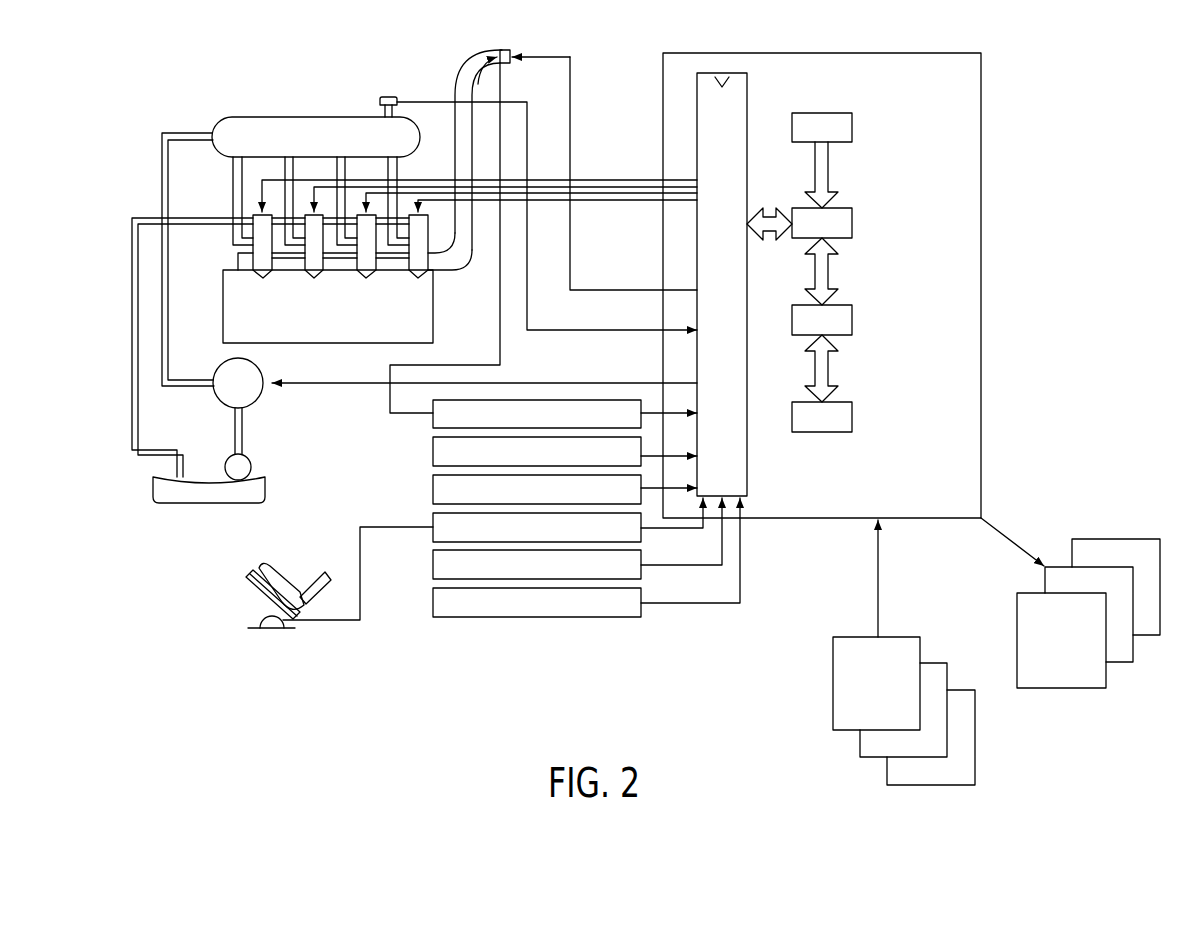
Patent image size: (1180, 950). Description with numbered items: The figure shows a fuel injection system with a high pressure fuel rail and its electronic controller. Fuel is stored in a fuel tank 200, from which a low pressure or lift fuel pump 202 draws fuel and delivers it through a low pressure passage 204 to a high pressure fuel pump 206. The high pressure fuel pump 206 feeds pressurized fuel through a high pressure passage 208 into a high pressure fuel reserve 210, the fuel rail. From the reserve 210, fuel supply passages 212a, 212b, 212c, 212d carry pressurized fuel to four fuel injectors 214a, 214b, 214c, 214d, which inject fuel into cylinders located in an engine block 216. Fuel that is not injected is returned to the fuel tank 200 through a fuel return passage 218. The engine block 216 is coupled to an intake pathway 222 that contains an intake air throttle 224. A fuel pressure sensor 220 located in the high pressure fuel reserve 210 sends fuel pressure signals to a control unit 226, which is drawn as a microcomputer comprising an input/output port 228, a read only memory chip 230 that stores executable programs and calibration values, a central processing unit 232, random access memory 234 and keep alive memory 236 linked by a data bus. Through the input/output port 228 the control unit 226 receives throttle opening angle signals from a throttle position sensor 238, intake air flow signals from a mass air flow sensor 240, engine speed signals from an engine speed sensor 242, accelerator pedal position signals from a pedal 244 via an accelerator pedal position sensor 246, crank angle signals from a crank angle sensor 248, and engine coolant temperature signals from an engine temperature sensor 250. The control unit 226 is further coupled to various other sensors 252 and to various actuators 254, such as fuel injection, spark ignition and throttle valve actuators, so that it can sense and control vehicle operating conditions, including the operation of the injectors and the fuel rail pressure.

The fuel tank 200 is at (178, 505).
The low pressure fuel pump 202 is at (252, 465).
The low pressure passage 204 is at (243, 428).
The high pressure fuel pump 206 is at (216, 398).
The high pressure passage 208 is at (162, 176).
The high pressure fuel reserve 210 is at (318, 116).
The fuel supply passage 212a is at (233, 178).
The fuel supply passage 212b is at (285, 172).
The fuel supply passage 212c is at (337, 172).
The fuel supply passage 212d is at (397, 172).
The fuel injector 214a is at (263, 281).
The fuel injector 214b is at (314, 281).
The fuel injector 214c is at (366, 281).
The fuel injector 214d is at (418, 281).
The engine block 216 is at (223, 304).
The fuel return passage 218 is at (132, 336).
The fuel pressure sensor 220 is at (387, 97).
The intake pathway 222 is at (455, 66).
The intake air throttle 224 is at (547, 56).
The control unit 226 is at (981, 288).
The input/output port 228 is at (750, 95).
The read only memory chip 230 is at (852, 127).
The central processing unit 232 is at (852, 222).
The random access memory 234 is at (852, 319).
The keep alive memory 236 is at (852, 416).
The throttle position sensor 238 is at (535, 400).
The mass air flow sensor 240 is at (433, 448).
The engine speed sensor 242 is at (433, 486).
The pedal 244 is at (250, 592).
The accelerator pedal position sensor 246 is at (433, 518).
The crank angle sensor 248 is at (433, 561).
The engine temperature sensor 250 is at (433, 599).
The various sensors 252 is at (904, 652).
The various actuators 254 is at (1070, 603).